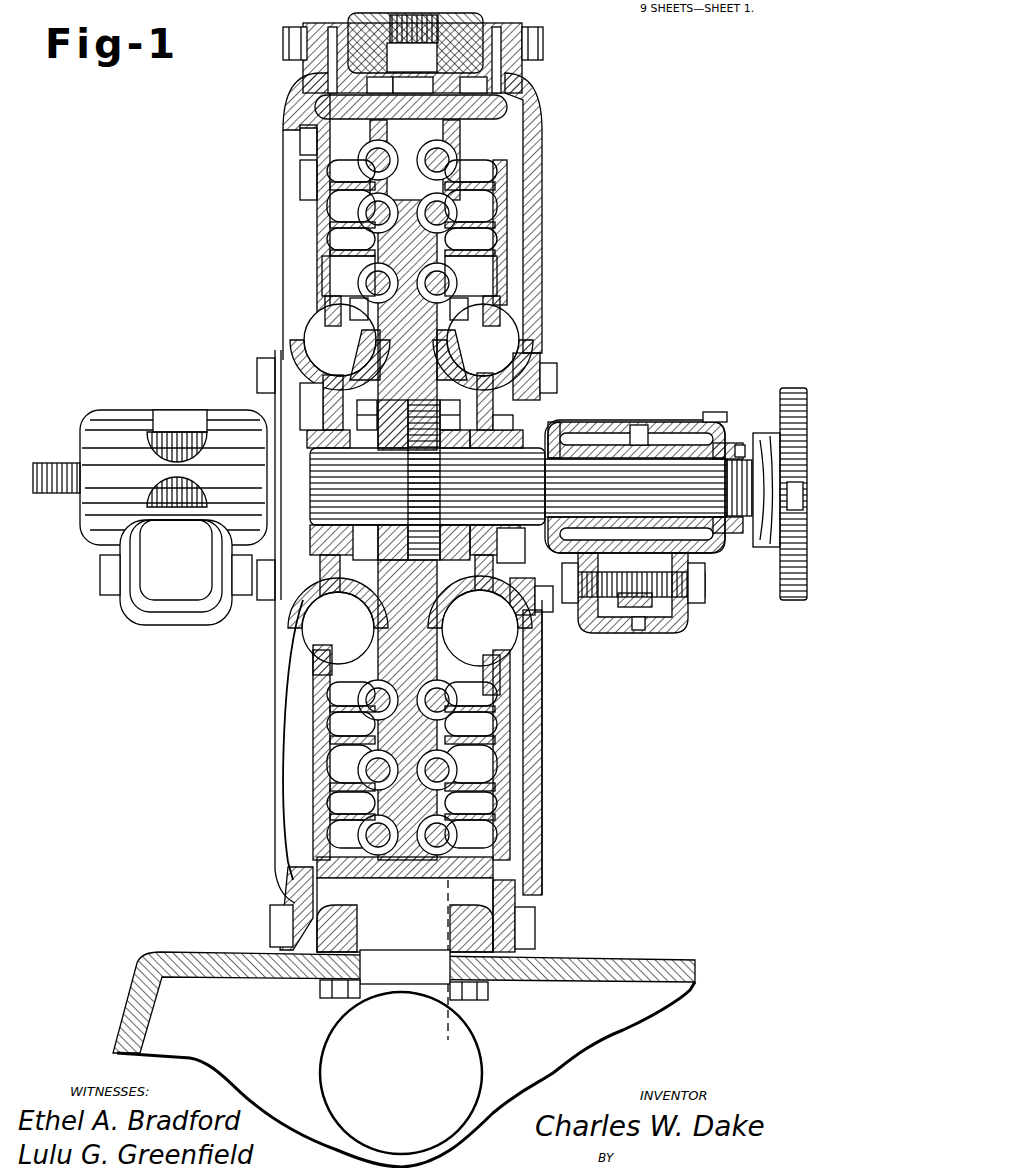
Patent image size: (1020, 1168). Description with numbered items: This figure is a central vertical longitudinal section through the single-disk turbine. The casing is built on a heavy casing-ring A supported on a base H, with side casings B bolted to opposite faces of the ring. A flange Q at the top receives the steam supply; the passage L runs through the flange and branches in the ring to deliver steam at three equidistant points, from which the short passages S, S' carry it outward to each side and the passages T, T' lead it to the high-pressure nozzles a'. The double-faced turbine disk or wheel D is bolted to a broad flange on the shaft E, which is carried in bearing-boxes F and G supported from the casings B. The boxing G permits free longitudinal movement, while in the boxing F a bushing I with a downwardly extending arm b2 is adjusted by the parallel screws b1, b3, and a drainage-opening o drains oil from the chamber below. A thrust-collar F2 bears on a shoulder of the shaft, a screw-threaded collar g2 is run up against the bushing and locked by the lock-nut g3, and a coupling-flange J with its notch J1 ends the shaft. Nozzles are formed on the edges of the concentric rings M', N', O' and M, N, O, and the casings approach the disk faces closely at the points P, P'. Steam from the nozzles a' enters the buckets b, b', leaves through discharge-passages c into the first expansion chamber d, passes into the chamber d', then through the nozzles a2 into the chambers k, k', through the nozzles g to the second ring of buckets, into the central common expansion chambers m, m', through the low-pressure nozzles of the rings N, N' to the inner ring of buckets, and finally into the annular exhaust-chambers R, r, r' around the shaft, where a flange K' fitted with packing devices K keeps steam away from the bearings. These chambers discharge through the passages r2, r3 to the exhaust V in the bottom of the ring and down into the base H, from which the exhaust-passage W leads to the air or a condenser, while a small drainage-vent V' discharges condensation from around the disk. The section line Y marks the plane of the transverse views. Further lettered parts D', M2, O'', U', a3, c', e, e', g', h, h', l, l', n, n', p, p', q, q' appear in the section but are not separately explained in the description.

The ring A is at (390, 72).
The housing B is at (540, 107).
The central column D is at (353, 285).
The lower housing D' is at (408, 731).
The shaft E is at (505, 488).
The flange F is at (545, 368).
The flange F2 is at (560, 430).
The gear casing G is at (135, 410).
The base plate H is at (215, 950).
The bearing housing I is at (680, 432).
The wheel J is at (778, 408).
The wheel hub J1 is at (798, 496).
The nut K is at (494, 475).
The nut K' is at (330, 470).
The plug L is at (413, 53).
The ball M is at (471, 834).
The ball M' is at (351, 486).
The ball M2 is at (475, 140).
The ball N is at (471, 486).
The ball N' is at (351, 486).
The post O is at (458, 481).
The post O' is at (358, 481).
The post O'' is at (414, 305).
The bearing block P is at (480, 465).
The bearing block P' is at (343, 465).
The plug Q is at (418, 20).
The ring R is at (420, 86).
The ring S is at (473, 85).
The ring S' is at (380, 85).
The chamber T is at (483, 259).
The chamber T' is at (309, 140).
The base U' is at (402, 915).
The base opening V is at (415, 962).
The base cavity V' is at (405, 899).
The shaft circle W is at (401, 1073).
The axis Y is at (465, 15).
The ring a' is at (413, 85).
The plate a2 is at (640, 425).
The foot a3 is at (308, 878).
The roller b is at (420, 503).
The roller b' is at (309, 818).
The bolt b1 is at (575, 603).
The bracket b2 is at (622, 630).
The bolt b3 is at (698, 605).
The roller c is at (431, 492).
The roller c' is at (391, 798).
The roller d is at (533, 474).
The roller d' is at (286, 461).
The roller e is at (532, 488).
The roller e' is at (290, 479).
The post g is at (409, 480).
The roller g' is at (412, 724).
The nut g2 is at (708, 414).
The nut g3 is at (743, 444).
The roller h is at (507, 485).
The roller h' is at (319, 459).
The roller k is at (477, 479).
The roller k' is at (351, 465).
The roller l is at (508, 249).
The roller l' is at (313, 249).
The roller m is at (533, 501).
The roller m' is at (311, 500).
The box n is at (471, 480).
The box n' is at (331, 475).
The opening o is at (640, 632).
The post p is at (518, 675).
The post p' is at (308, 660).
The roller q is at (471, 694).
The roller q' is at (331, 695).
The chamber r is at (463, 626).
The chamber r' is at (340, 470).
The base r2 is at (490, 895).
The base r3 is at (332, 910).